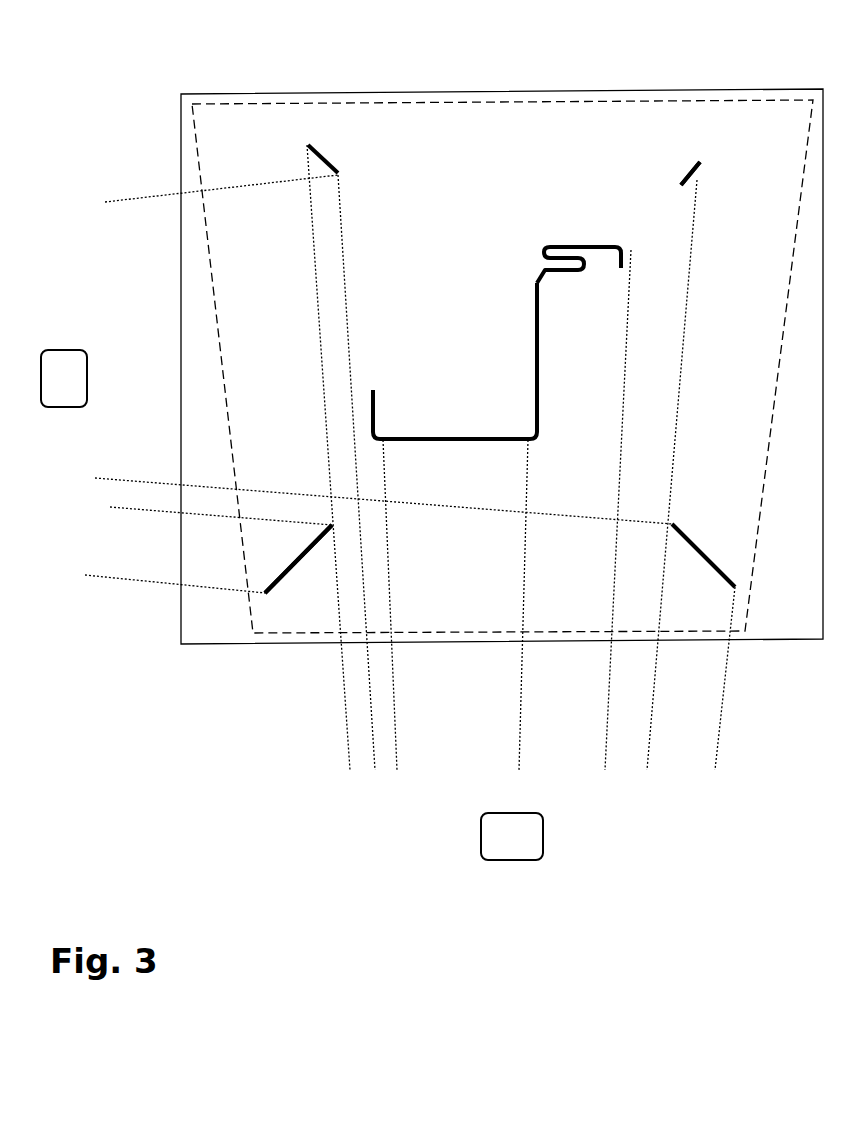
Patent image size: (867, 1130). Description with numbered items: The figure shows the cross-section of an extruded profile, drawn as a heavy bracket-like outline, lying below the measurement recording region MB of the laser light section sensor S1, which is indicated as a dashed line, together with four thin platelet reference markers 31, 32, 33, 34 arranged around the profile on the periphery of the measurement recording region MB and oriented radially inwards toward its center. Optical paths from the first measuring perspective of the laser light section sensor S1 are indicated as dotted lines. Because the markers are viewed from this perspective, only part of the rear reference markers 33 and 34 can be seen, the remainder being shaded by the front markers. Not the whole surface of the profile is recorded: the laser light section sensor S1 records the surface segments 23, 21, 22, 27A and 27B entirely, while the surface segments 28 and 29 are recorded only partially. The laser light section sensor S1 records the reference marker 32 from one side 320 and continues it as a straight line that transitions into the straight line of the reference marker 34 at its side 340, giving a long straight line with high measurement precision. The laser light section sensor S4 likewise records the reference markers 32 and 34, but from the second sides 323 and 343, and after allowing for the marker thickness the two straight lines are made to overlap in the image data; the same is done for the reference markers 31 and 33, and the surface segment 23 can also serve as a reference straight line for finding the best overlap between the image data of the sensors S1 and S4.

The surface segment 21 is at (458, 440).
The surface segment 22 is at (537, 440).
The surface segment 23 is at (373, 438).
The surface segment 27A is at (535, 291).
The surface segment 27B is at (555, 272).
The surface segment 28 is at (595, 262).
The surface segment 29 is at (623, 270).
The reference marker 31 is at (735, 598).
The reference marker 32 is at (262, 605).
The side of reference marker 320 is at (302, 565).
The second side of reference marker 323 is at (287, 568).
The reference marker 33 is at (314, 143).
The reference marker 34 is at (702, 163).
The side of reference marker 340 is at (700, 170).
The second side of reference marker 343 is at (683, 178).
The measurement recording region MB is at (763, 480).
The laser light section sensor S1 is at (512, 838).
The laser light section sensor S4 is at (60, 366).